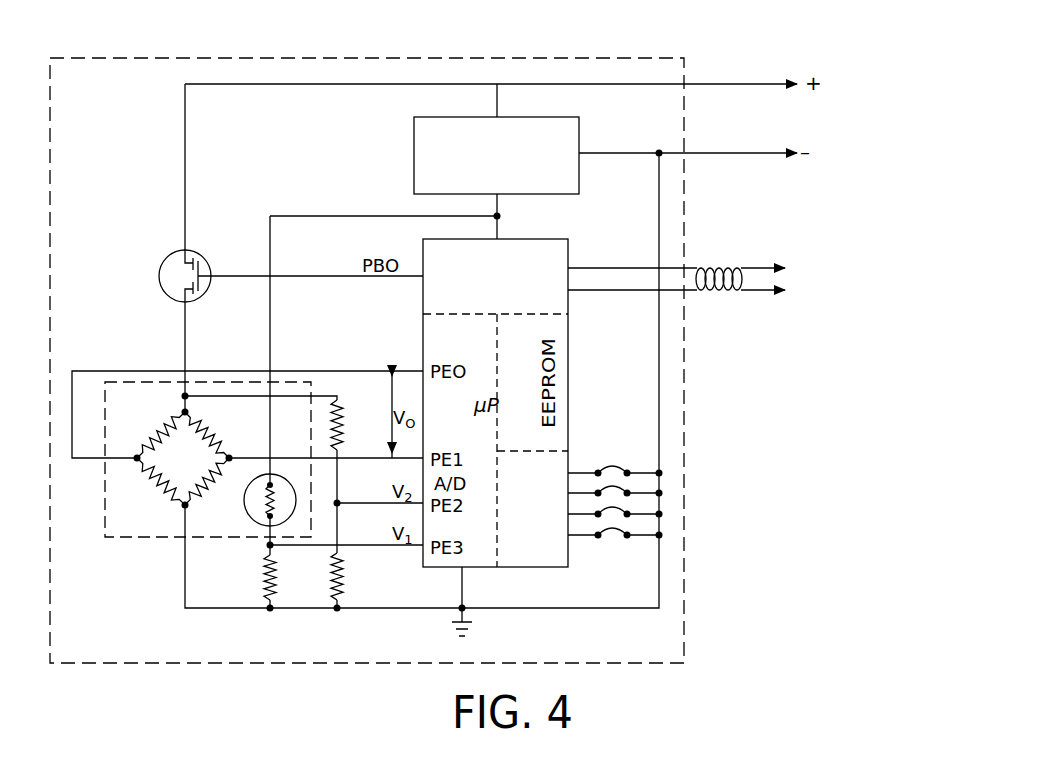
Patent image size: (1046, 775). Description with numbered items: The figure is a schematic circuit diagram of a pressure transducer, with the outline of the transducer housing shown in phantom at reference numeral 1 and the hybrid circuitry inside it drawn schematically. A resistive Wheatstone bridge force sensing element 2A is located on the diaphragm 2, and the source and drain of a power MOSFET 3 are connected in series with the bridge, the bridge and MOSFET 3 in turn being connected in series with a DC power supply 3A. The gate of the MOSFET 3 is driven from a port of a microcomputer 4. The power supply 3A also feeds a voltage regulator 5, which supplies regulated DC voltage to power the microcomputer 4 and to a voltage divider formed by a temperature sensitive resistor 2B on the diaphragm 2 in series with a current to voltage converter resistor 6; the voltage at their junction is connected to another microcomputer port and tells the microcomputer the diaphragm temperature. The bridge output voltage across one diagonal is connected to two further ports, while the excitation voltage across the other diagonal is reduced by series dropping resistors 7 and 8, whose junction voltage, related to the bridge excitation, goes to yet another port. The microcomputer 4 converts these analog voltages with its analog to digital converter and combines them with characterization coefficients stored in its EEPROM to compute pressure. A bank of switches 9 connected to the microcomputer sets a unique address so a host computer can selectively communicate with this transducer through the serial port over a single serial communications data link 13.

The pressure transducer housing outline 1 is at (173, 57).
The diaphragm 2 is at (105, 493).
The resistive Wheatstone bridge force sensing element 2A is at (168, 496).
The temperature sensitive resistor 2B is at (249, 506).
The power MOSFET 3 is at (166, 259).
The DC power supply 3A is at (893, 88).
The microcomputer 4 is at (525, 567).
The voltage regulator 5 is at (414, 150).
The current to voltage converter resistor 6 is at (283, 584).
The dropping resistor 7 is at (351, 585).
The dropping resistor 8 is at (345, 419).
The bank of switches 9 is at (612, 527).
The serial communications data link 13 is at (753, 292).